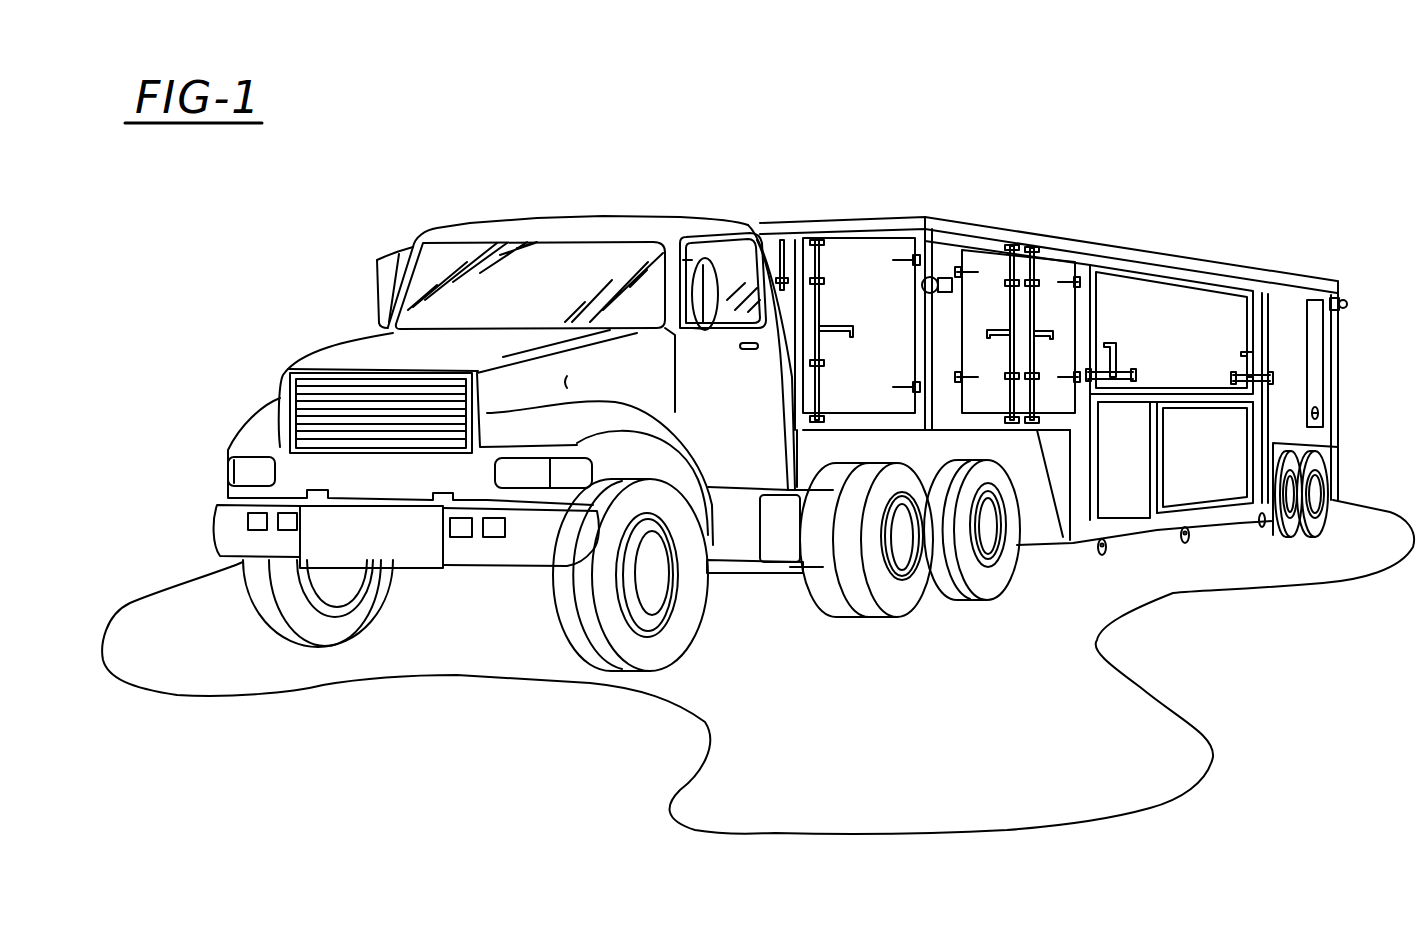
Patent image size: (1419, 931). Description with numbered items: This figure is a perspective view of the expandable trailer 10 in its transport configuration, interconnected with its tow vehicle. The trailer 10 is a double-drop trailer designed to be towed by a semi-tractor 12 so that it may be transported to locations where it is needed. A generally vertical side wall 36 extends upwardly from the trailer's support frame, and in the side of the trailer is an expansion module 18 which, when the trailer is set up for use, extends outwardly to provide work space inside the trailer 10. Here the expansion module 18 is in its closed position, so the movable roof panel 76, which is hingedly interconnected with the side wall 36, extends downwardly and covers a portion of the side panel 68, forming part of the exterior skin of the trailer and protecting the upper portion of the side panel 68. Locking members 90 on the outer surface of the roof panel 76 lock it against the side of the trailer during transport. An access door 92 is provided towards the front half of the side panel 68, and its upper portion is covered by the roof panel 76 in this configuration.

The expandable trailer 10 is at (1210, 207).
The semi-tractor 12 is at (503, 190).
The expansion module 18 is at (1197, 480).
The side wall 36 is at (1283, 407).
The side panel 68 is at (1217, 462).
The movable roof panel 76 is at (1190, 315).
The locking members 90 is at (1247, 371).
The access door 92 is at (1125, 483).